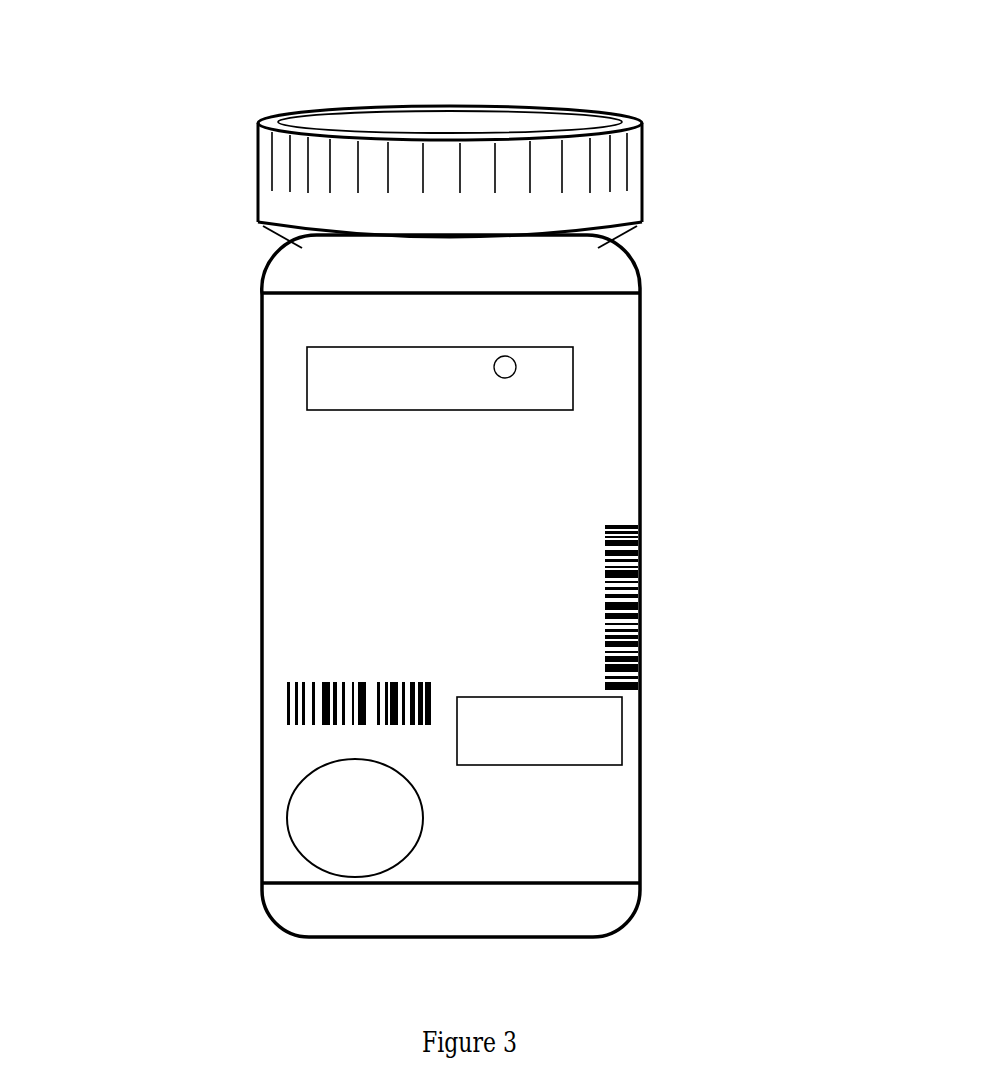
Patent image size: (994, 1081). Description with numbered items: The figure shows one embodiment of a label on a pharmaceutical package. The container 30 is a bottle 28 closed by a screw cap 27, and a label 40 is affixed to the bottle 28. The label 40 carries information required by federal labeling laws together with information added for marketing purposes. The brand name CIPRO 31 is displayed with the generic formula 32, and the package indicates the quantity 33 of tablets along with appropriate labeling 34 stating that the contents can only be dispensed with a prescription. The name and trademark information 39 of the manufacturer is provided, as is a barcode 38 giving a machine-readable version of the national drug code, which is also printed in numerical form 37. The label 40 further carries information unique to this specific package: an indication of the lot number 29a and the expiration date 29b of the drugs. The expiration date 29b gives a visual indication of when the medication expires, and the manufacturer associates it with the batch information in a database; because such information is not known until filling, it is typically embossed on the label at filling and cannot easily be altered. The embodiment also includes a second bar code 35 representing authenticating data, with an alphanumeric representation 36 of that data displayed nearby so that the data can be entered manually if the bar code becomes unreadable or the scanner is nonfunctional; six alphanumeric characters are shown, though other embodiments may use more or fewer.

The screw cap 27 is at (562, 108).
The bottle 28 is at (537, 937).
The lot information 29a is at (578, 717).
The expiration date 29b is at (617, 750).
The container 30 is at (152, 222).
The brand name 31 is at (307, 380).
The generic formula 32 is at (312, 437).
The quantity 33 is at (330, 500).
The labeling 34 is at (297, 588).
The second bar code 35 is at (285, 700).
The alphanumeric representation 36 is at (292, 746).
The national drug code in numerical form 37 is at (595, 308).
The barcode 38 is at (645, 606).
The name and trademark information 39 is at (620, 798).
The label 40 is at (578, 458).